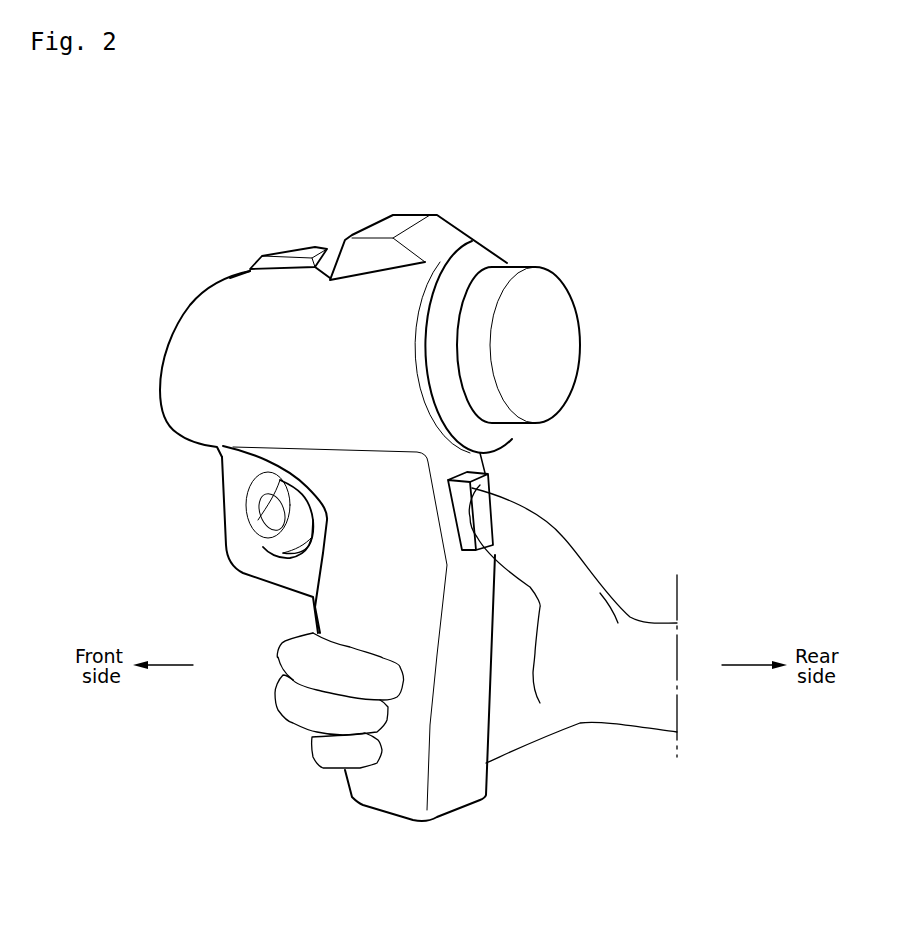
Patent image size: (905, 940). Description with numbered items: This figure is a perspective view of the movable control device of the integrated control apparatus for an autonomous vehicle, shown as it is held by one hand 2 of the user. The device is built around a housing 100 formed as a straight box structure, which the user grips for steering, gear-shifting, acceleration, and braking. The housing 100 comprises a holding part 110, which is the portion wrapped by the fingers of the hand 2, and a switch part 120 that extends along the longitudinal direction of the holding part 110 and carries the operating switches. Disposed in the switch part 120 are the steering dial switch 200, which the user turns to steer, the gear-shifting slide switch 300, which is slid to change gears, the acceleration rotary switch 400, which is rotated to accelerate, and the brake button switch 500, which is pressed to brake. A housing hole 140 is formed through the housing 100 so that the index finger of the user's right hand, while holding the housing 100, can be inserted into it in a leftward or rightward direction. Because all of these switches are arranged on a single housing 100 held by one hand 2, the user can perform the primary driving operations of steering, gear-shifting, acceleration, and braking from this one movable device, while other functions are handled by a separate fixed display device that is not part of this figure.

The housing 100 is at (150, 412).
The holding part 110 is at (457, 788).
The switch part 120 is at (203, 328).
The housing hole 140 is at (260, 538).
The steering dial switch 200 is at (562, 350).
The gear-shifting slide switch 300 is at (283, 252).
The acceleration rotary switch 400 is at (293, 552).
The brake button switch 500 is at (480, 483).
The hand 2 is at (590, 613).